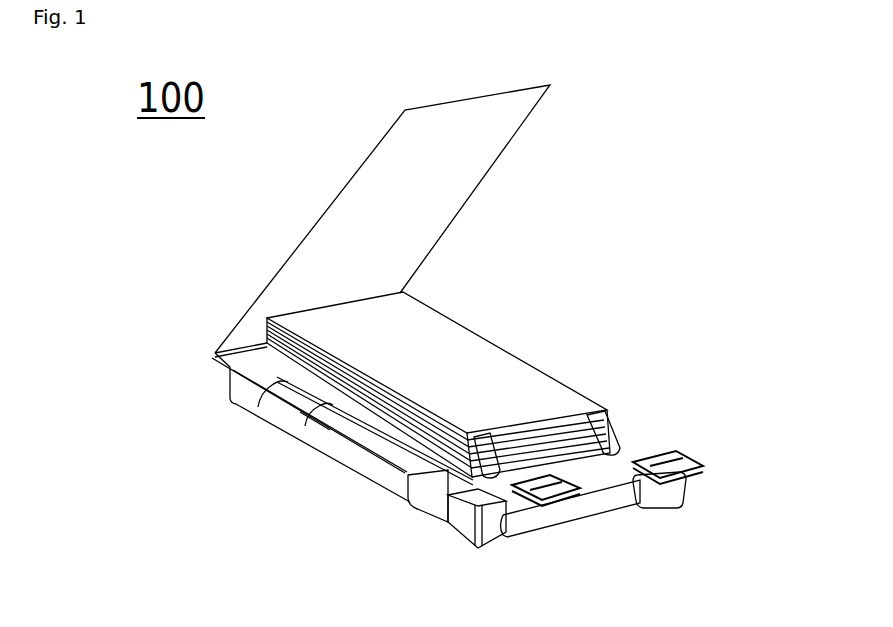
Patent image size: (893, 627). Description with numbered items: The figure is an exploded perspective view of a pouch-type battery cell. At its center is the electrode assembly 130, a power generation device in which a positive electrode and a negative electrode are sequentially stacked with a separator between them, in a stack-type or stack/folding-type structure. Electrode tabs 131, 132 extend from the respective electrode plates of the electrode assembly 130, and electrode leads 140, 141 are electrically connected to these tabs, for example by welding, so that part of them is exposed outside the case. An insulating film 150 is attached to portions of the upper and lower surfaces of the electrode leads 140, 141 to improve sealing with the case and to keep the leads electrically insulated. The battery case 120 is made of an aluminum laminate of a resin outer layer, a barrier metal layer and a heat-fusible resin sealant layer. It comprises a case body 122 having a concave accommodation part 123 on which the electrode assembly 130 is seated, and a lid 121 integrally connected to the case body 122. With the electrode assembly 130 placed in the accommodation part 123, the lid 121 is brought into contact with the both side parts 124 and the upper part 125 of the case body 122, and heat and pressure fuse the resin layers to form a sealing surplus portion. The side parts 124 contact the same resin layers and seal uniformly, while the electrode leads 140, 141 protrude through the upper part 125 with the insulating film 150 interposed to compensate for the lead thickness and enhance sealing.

The battery case 120 is at (213, 351).
The lid 121 is at (284, 262).
The case body 122 is at (357, 471).
The accommodation part 123 is at (258, 407).
The both side parts 124 is at (305, 426).
The upper part 125 is at (633, 473).
The electrode assembly 130 is at (497, 318).
The electrode tab 131 is at (412, 505).
The electrode tab 132 is at (625, 414).
The electrode lead 140 is at (447, 528).
The electrode lead 141 is at (690, 447).
The insulating film 150 is at (492, 540).